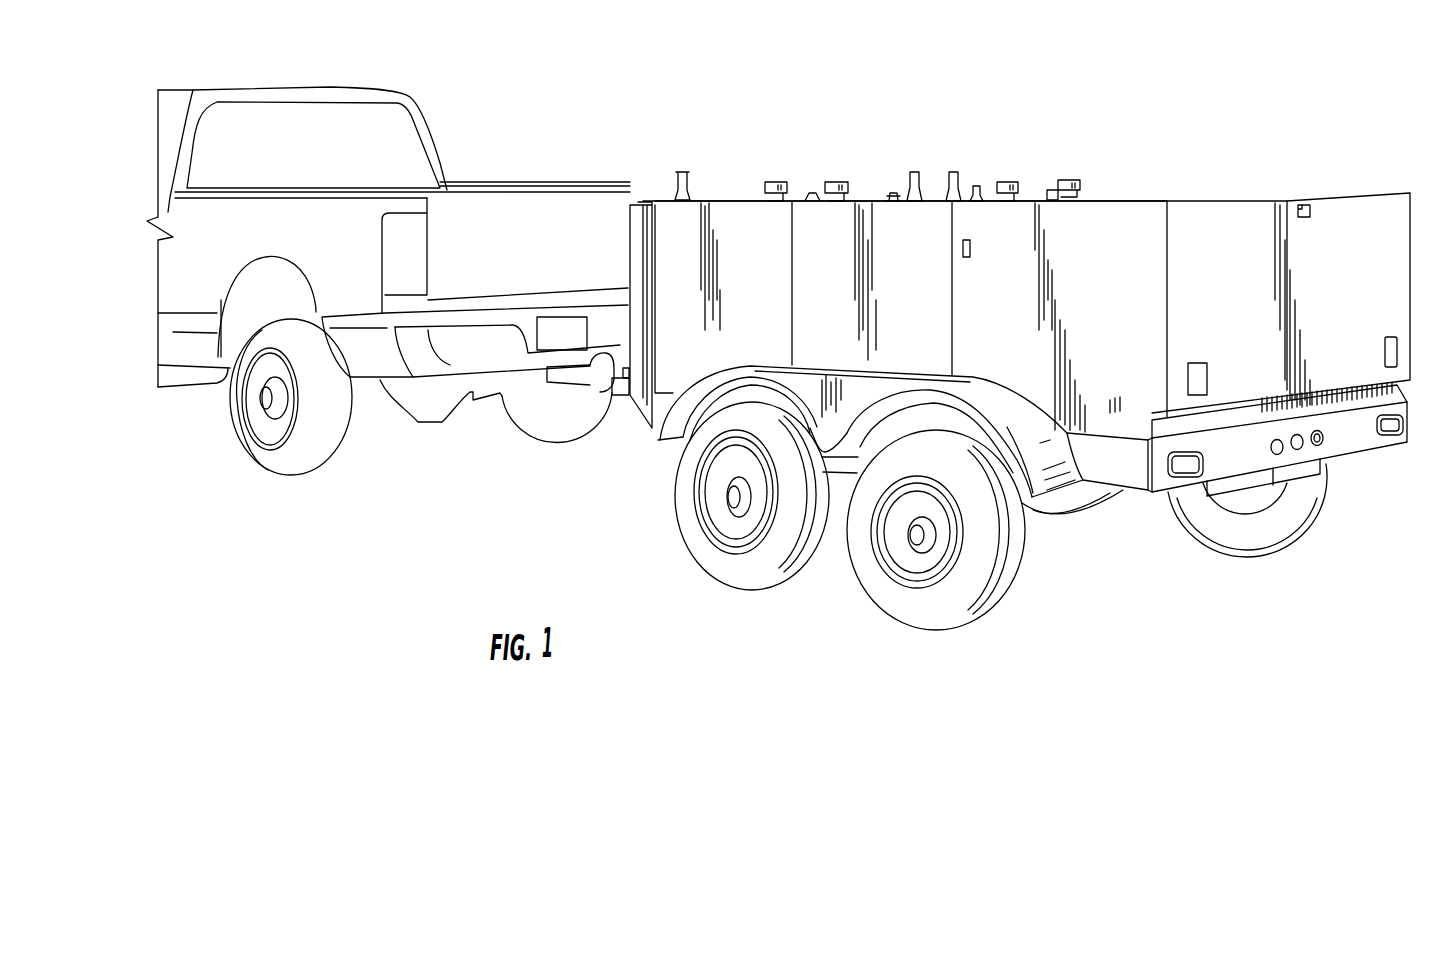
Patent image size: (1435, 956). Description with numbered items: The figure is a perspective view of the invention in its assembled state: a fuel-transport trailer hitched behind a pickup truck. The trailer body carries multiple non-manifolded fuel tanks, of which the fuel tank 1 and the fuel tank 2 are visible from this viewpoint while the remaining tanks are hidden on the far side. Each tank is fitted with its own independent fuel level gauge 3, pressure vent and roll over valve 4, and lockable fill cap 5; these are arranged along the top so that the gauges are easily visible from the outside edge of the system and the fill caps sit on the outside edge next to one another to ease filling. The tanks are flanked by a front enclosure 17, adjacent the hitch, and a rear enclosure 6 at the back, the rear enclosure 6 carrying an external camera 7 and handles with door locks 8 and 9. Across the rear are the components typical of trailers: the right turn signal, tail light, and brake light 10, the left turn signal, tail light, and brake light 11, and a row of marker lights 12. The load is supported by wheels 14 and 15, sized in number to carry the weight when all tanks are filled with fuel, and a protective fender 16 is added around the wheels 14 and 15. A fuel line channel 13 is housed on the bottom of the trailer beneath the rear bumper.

The fuel tank 1 is at (733, 212).
The fuel tank 2 is at (893, 227).
The fuel level gauge 3 is at (688, 178).
The pressure vent and roll over valve 4 is at (888, 194).
The lockable fill cap 5 is at (1067, 182).
The rear enclosure 6 is at (1088, 230).
The external camera 7 is at (1303, 203).
The handle with door lock 8 is at (1200, 367).
The handle with door lock 9 is at (1387, 350).
The right turn signal, tail light, and brake light 10 is at (1389, 433).
The left turn signal, tail light, and brake light 11 is at (1183, 467).
The marker lights 12 is at (1323, 440).
The fuel line channel 13 is at (1255, 483).
The wheel 14 is at (930, 550).
The wheel 15 is at (747, 510).
The protective fender 16 is at (730, 395).
The front enclosure 17 is at (642, 273).